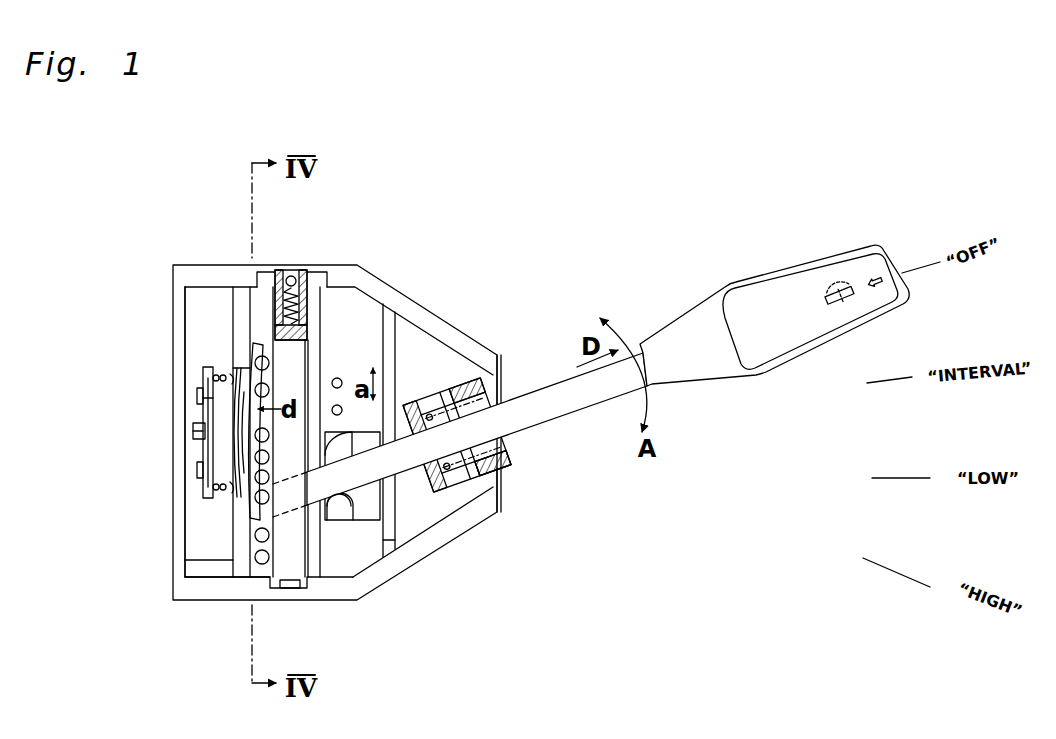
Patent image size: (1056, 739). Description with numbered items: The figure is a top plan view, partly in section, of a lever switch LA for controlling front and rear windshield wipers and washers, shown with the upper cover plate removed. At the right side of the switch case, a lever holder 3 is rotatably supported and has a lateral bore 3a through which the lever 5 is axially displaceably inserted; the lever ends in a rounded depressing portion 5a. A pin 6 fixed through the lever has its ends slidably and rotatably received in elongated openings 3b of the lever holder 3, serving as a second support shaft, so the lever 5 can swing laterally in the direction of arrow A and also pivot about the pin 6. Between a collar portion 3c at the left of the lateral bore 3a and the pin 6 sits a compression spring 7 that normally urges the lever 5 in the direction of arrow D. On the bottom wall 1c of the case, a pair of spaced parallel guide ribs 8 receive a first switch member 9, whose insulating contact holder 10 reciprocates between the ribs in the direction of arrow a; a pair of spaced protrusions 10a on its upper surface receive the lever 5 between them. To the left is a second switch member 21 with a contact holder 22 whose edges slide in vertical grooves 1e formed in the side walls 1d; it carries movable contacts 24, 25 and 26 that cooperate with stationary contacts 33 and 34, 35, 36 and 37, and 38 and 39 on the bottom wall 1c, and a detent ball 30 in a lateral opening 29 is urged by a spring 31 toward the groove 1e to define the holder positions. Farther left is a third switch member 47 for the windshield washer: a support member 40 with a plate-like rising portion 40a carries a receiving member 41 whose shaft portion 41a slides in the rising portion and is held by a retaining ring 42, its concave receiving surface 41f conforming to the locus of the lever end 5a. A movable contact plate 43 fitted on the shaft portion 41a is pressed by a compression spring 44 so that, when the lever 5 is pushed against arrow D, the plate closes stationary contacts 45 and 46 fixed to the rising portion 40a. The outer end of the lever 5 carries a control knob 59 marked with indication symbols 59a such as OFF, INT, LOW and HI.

The bottom wall 1c is at (380, 583).
The side walls 1d is at (222, 603).
The grooves 1e is at (258, 284).
The lever holder 3 is at (423, 395).
The lateral bore 3a is at (485, 388).
The elongated openings 3b is at (440, 387).
The collar portion 3c is at (498, 435).
The lever 5 is at (561, 380).
The rounded depressing portion 5a is at (330, 488).
The pin 6 is at (510, 470).
The compression spring 7 is at (418, 403).
The guide ribs 8 is at (437, 527).
The first switch member 9 is at (366, 306).
The contact holder 10 is at (390, 523).
The protrusions 10a is at (403, 462).
The second switch member 21 is at (294, 549).
The contact holder 22 is at (290, 361).
The movable contact 24 is at (173, 598).
The movable contact 25 is at (236, 482).
The movable contact 26 is at (273, 374).
The lateral opening 29 is at (287, 322).
The detent ball 30 is at (289, 278).
The spring 31 is at (298, 298).
The stationary contact 33 is at (205, 590).
The stationary contact 34 is at (182, 570).
The stationary contact 35 is at (222, 508).
The stationary contact 36 is at (228, 470).
The stationary contact 37 is at (203, 413).
The stationary contact 38 is at (200, 393).
The stationary contact 39 is at (275, 373).
The support member 40 is at (193, 557).
The plate-like rising portion 40a is at (207, 370).
The receiving member 41 is at (201, 459).
The shaft portion 41a is at (197, 427).
The receiving surface 41f is at (200, 449).
The retaining ring 42 is at (197, 432).
The movable contact plate 43 is at (212, 432).
The compression spring 44 is at (252, 362).
The stationary contact 45 is at (210, 395).
The stationary contact 46 is at (205, 468).
The third switch member 47 is at (210, 297).
The control knob 59 is at (728, 287).
The indication symbols 59a is at (792, 285).
The lever switch LA is at (537, 248).